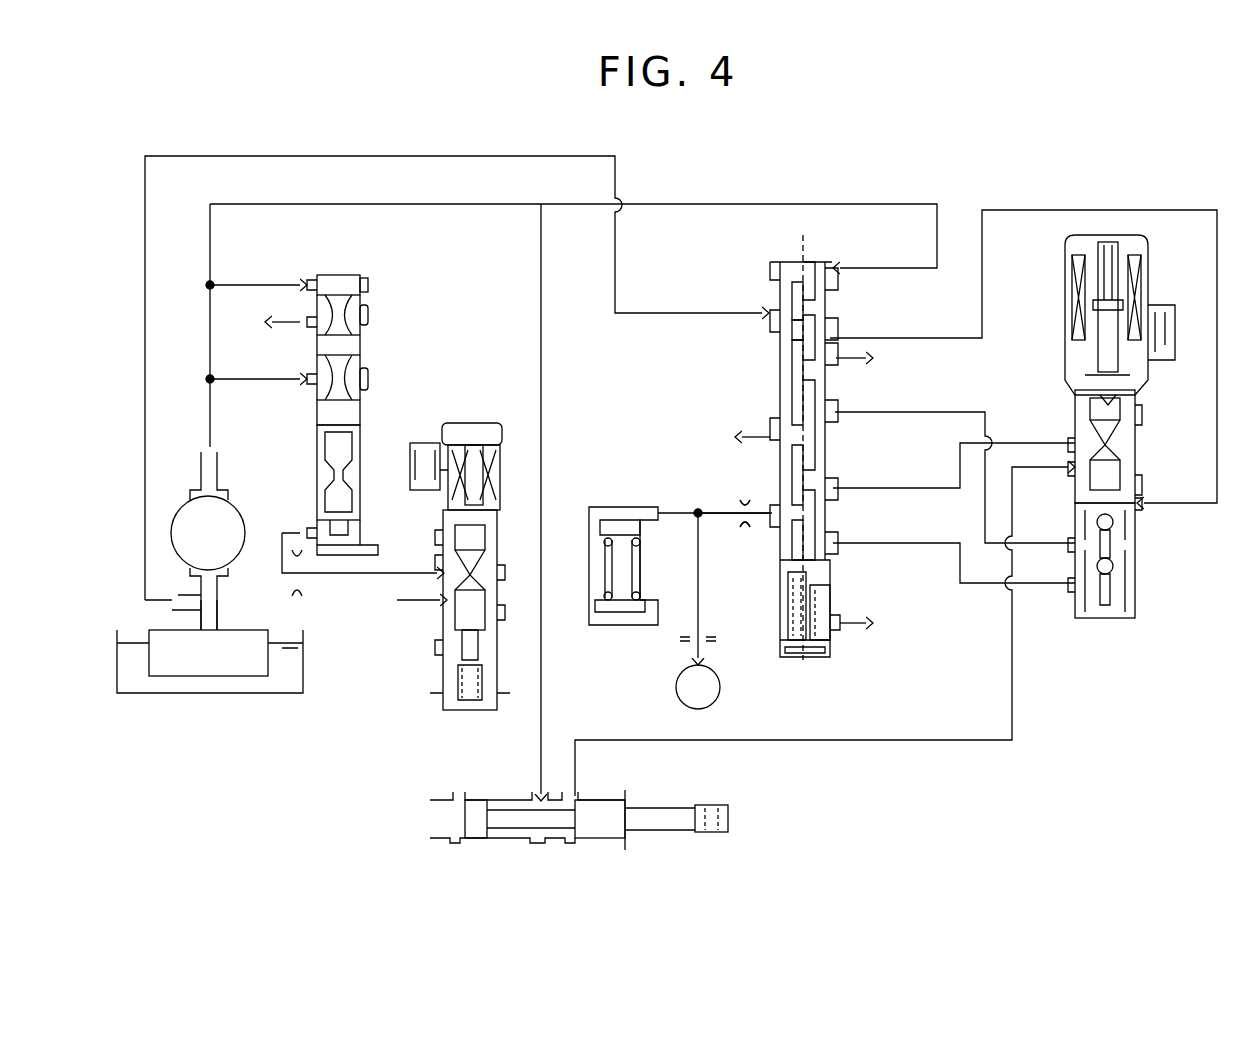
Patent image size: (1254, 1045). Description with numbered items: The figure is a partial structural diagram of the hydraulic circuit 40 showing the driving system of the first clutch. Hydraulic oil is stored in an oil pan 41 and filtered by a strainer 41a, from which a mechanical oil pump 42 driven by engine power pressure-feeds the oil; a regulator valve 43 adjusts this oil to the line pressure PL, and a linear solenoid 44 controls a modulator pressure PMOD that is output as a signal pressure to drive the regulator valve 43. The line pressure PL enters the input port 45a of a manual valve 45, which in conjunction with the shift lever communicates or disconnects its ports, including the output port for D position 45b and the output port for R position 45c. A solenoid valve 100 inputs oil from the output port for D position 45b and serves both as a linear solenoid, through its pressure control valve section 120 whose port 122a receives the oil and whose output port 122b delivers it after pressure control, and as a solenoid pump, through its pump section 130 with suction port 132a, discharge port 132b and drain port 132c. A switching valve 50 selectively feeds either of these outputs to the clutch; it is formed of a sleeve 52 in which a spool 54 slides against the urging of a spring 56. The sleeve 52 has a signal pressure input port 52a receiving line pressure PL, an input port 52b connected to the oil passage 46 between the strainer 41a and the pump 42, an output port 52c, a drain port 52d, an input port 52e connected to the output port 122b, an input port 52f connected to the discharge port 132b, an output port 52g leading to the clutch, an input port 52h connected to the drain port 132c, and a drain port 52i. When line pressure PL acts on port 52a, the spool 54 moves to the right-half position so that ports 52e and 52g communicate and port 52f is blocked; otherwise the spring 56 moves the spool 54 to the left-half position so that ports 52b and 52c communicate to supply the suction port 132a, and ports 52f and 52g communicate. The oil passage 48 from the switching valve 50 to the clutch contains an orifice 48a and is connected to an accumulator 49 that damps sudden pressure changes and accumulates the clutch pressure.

The hydraulic circuit 40 is at (360, 132).
The oil pan 41 is at (305, 668).
The strainer 41a is at (262, 630).
The mechanical oil pump 42 is at (243, 506).
The regulator valve 43 is at (364, 356).
The linear solenoid 44 is at (462, 423).
The manual valve 45 is at (546, 821).
The input port 45a is at (532, 797).
The output port for D position 45b is at (590, 790).
The output port for R position 45c is at (440, 793).
The oil passage 46 is at (222, 604).
The oil passage 48 is at (718, 520).
The orifice 48a is at (750, 530).
The accumulator 49 is at (623, 507).
The switching valve 50 is at (832, 246).
The sleeve 52 is at (790, 262).
The signal pressure input port 52a is at (842, 280).
The input port 52b is at (770, 316).
The output port 52c is at (838, 336).
The drain port 52d is at (840, 348).
The input port 52e is at (838, 484).
The input port 52f is at (838, 538).
The output port 52g is at (770, 508).
The input port 52h is at (838, 408).
The drain port 52i is at (770, 430).
The spool 54 is at (790, 365).
The spring 56 is at (790, 607).
The solenoid valve 100 is at (1063, 282).
The pressure control valve section 120 is at (1148, 398).
The input port 122a is at (1070, 473).
The output port 122b is at (1078, 440).
The pump section 130 is at (1148, 525).
The suction port 132a is at (1150, 507).
The discharge port 132b is at (1078, 585).
The drain port 132c is at (1078, 544).